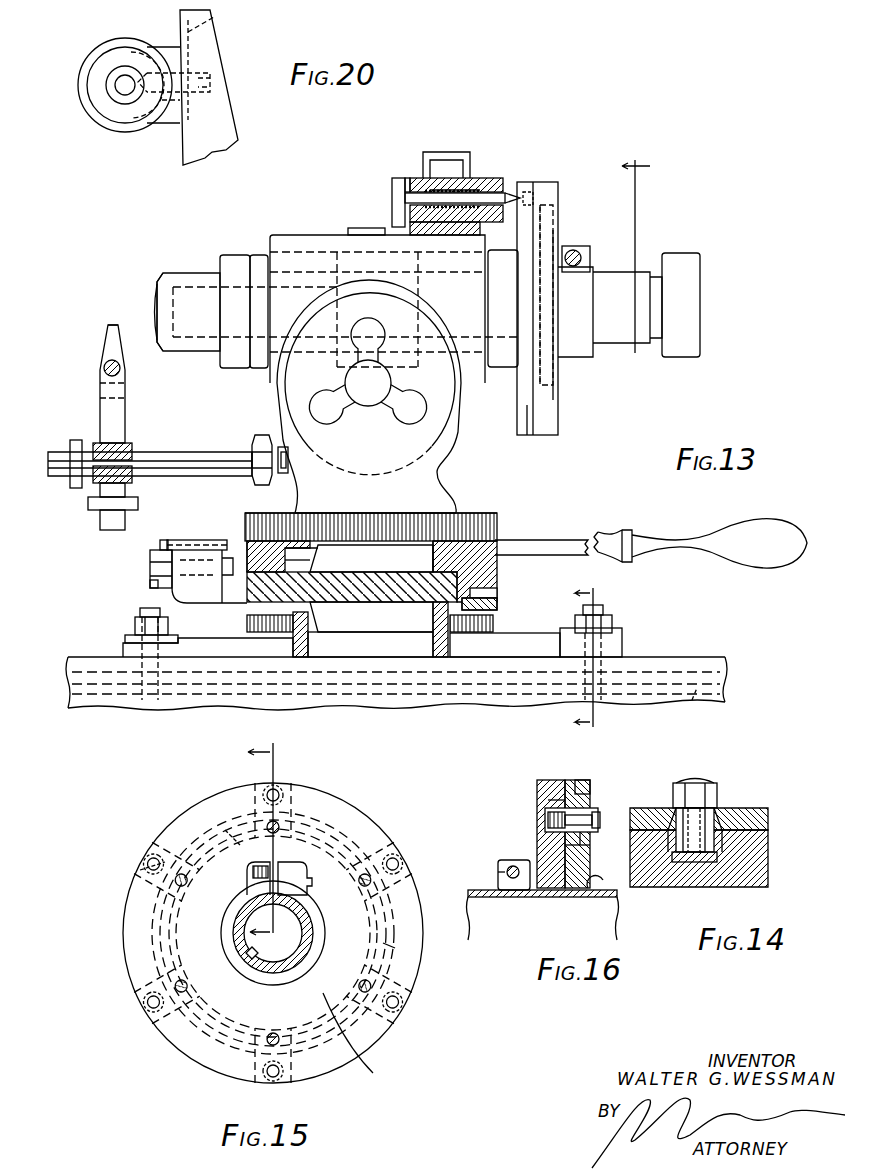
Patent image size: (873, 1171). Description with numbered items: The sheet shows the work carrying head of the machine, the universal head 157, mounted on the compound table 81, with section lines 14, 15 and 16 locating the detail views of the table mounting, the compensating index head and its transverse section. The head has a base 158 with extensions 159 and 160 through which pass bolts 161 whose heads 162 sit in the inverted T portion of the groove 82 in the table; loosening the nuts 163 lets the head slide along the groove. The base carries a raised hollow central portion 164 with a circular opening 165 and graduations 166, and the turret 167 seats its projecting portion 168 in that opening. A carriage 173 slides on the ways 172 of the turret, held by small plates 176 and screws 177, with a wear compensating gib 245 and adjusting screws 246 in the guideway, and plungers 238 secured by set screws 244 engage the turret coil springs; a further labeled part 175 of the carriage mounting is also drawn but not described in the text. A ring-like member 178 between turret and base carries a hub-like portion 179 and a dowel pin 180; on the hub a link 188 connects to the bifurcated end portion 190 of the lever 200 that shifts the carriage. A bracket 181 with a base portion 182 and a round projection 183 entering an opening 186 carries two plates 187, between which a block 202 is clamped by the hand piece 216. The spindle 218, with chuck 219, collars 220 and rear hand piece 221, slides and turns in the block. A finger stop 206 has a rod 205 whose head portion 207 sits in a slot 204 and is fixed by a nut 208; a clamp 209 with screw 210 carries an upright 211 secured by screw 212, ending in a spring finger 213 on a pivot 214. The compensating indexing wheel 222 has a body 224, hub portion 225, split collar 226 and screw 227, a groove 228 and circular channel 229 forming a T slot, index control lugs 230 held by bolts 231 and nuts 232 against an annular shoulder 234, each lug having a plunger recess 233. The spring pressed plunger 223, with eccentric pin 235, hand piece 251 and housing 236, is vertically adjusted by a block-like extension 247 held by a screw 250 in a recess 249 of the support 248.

In FIG. 13, the section line 14— 14 is at (597, 656).
In FIG. 13, the section line 15— 15 is at (642, 244).
In FIG. 15, the section line 16— 16 is at (274, 841).
In FIG. 13, the compound table 81 is at (742, 669).
In FIG. 14, the compound table 81 is at (776, 857).
In FIG. 13, the groove 82 is at (692, 703).
In FIG. 14, the groove 82 is at (672, 875).
In FIG. 13, the universal head 157 is at (281, 212).
In FIG. 13, the base 158 is at (485, 660).
In FIG. 13, the extension 159 is at (125, 647).
In FIG. 13, the extension 160 is at (620, 640).
In FIG. 14, the extension 160 is at (755, 815).
In FIG. 13, the bolt 161 is at (144, 610).
In FIG. 14, the bolt 161 is at (702, 778).
In FIG. 13, the bolt head 162 is at (140, 702).
In FIG. 14, the bolt head 162 is at (696, 866).
In FIG. 13, the nut 163 is at (135, 627).
In FIG. 14, the nut 163 is at (713, 795).
In FIG. 13, the raised hollow central portion 164 is at (300, 660).
In FIG. 13, the circular opening 165 is at (441, 660).
In FIG. 13, the graduations 166 is at (497, 621).
In FIG. 13, the turret 167 is at (491, 542).
In FIG. 13, the projecting portion 168 is at (380, 660).
In FIG. 13, the ways 172 is at (250, 546).
In FIG. 13, the carriage 173 is at (580, 535).
In FIG. 13, the knurled ring 175 is at (256, 622).
In FIG. 13, the plate 176 is at (250, 608).
In FIG. 13, the screw 177 is at (232, 593).
In FIG. 13, the ring-like member 178 is at (497, 606).
In FIG. 13, the hub-like portion 179 is at (210, 540).
In FIG. 13, the dowel pin 180 is at (371, 619).
In FIG. 13, the bracket 181 is at (456, 476).
In FIG. 13, the base portion 182 is at (497, 520).
In FIG. 13, the round projection 183 is at (432, 545).
In FIG. 13, the opening 186 is at (326, 541).
In FIG. 13, the plates 187 is at (445, 421).
In FIG. 13, the link 188 is at (150, 569).
In FIG. 13, the bifurcated end portion 190 is at (163, 545).
In FIG. 13, the lever 200 is at (600, 530).
In FIG. 13, the block 202 is at (342, 215).
In FIG. 13, the slot 204 is at (283, 447).
In FIG. 13, the rod 205 is at (220, 452).
In FIG. 13, the finger stop 206 is at (151, 419).
In FIG. 13, the head portion 207 is at (258, 435).
In FIG. 13, the nut 208 is at (255, 482).
In FIG. 13, the clamp 209 is at (87, 473).
In FIG. 13, the screw 210 is at (140, 503).
In FIG. 13, the upright 211 is at (120, 418).
In FIG. 13, the screw 212 is at (76, 440).
In FIG. 13, the spring finger 213 is at (108, 327).
In FIG. 13, the pivot 214 is at (104, 370).
In FIG. 13, the hand piece 216 is at (342, 417).
In FIG. 13, the spindle 218 is at (198, 267).
In FIG. 15, the spindle 218 is at (262, 960).
In FIG. 16, the spindle 218 is at (488, 897).
In FIG. 13, the chuck 219 is at (157, 288).
In FIG. 13, the collars 220 is at (233, 258).
In FIG. 13, the hand piece 221 is at (692, 258).
In FIG. 13, the compensating indexing wheel 222 is at (550, 172).
In FIG. 15, the compensating indexing wheel 222 is at (405, 830).
In FIG. 16, the compensating indexing wheel 222 is at (525, 782).
In FIG. 20, the spring pressed plunger 223 is at (126, 80).
In FIG. 13, the spring pressed plunger 223 is at (455, 190).
In FIG. 13, the body 224 is at (569, 274).
In FIG. 15, the body 224 is at (350, 816).
In FIG. 16, the body 224 is at (556, 780).
In FIG. 13, the hub portion 225 is at (556, 238).
In FIG. 15, the hub portion 225 is at (369, 1035).
In FIG. 16, the hub portion 225 is at (594, 892).
In FIG. 13, the split collar 226 is at (587, 325).
In FIG. 15, the split collar 226 is at (312, 942).
In FIG. 16, the split collar 226 is at (497, 872).
In FIG. 13, the screw 227 is at (583, 252).
In FIG. 15, the screw 227 is at (302, 882).
In FIG. 16, the screw 227 is at (512, 864).
In FIG. 13, the groove 228 is at (531, 405).
In FIG. 15, the groove 228 is at (385, 943).
In FIG. 13, the circular channel 229 is at (553, 394).
In FIG. 15, the circular channel 229 is at (230, 824).
In FIG. 16, the circular channel 229 is at (546, 801).
In FIG. 13, the index control lugs 230 is at (525, 182).
In FIG. 15, the index control lugs 230 is at (290, 795).
In FIG. 16, the index control lugs 230 is at (590, 812).
In FIG. 15, the bolts 231 is at (180, 870).
In FIG. 16, the bolts 231 is at (590, 838).
In FIG. 16, the nut 232 is at (548, 820).
In FIG. 13, the detent hole 233 is at (535, 198).
In FIG. 15, the detent hole 233 is at (153, 860).
In FIG. 16, the detent hole 233 is at (586, 800).
In FIG. 16, the annular shoulder 234 is at (588, 858).
In FIG. 13, the pin 235 is at (412, 178).
In FIG. 20, the plunger housing 236 is at (112, 62).
In FIG. 13, the plunger housing 236 is at (470, 180).
In FIG. 13, the plungers 238 is at (371, 576).
In FIG. 13, the set screws 244 is at (378, 606).
In FIG. 13, the wear compensating gib 245 is at (262, 545).
In FIG. 13, the adjusting screws 246 is at (302, 578).
In FIG. 20, the block-like extension 247 is at (170, 115).
In FIG. 20, the support 248 is at (210, 113).
In FIG. 13, the support 248 is at (431, 152).
In FIG. 20, the recess 249 is at (196, 31).
In FIG. 13, the recess 249 is at (455, 185).
In FIG. 20, the screw 250 is at (213, 58).
In FIG. 20, the hand piece 251 is at (82, 68).
In FIG. 13, the hand piece 251 is at (398, 196).